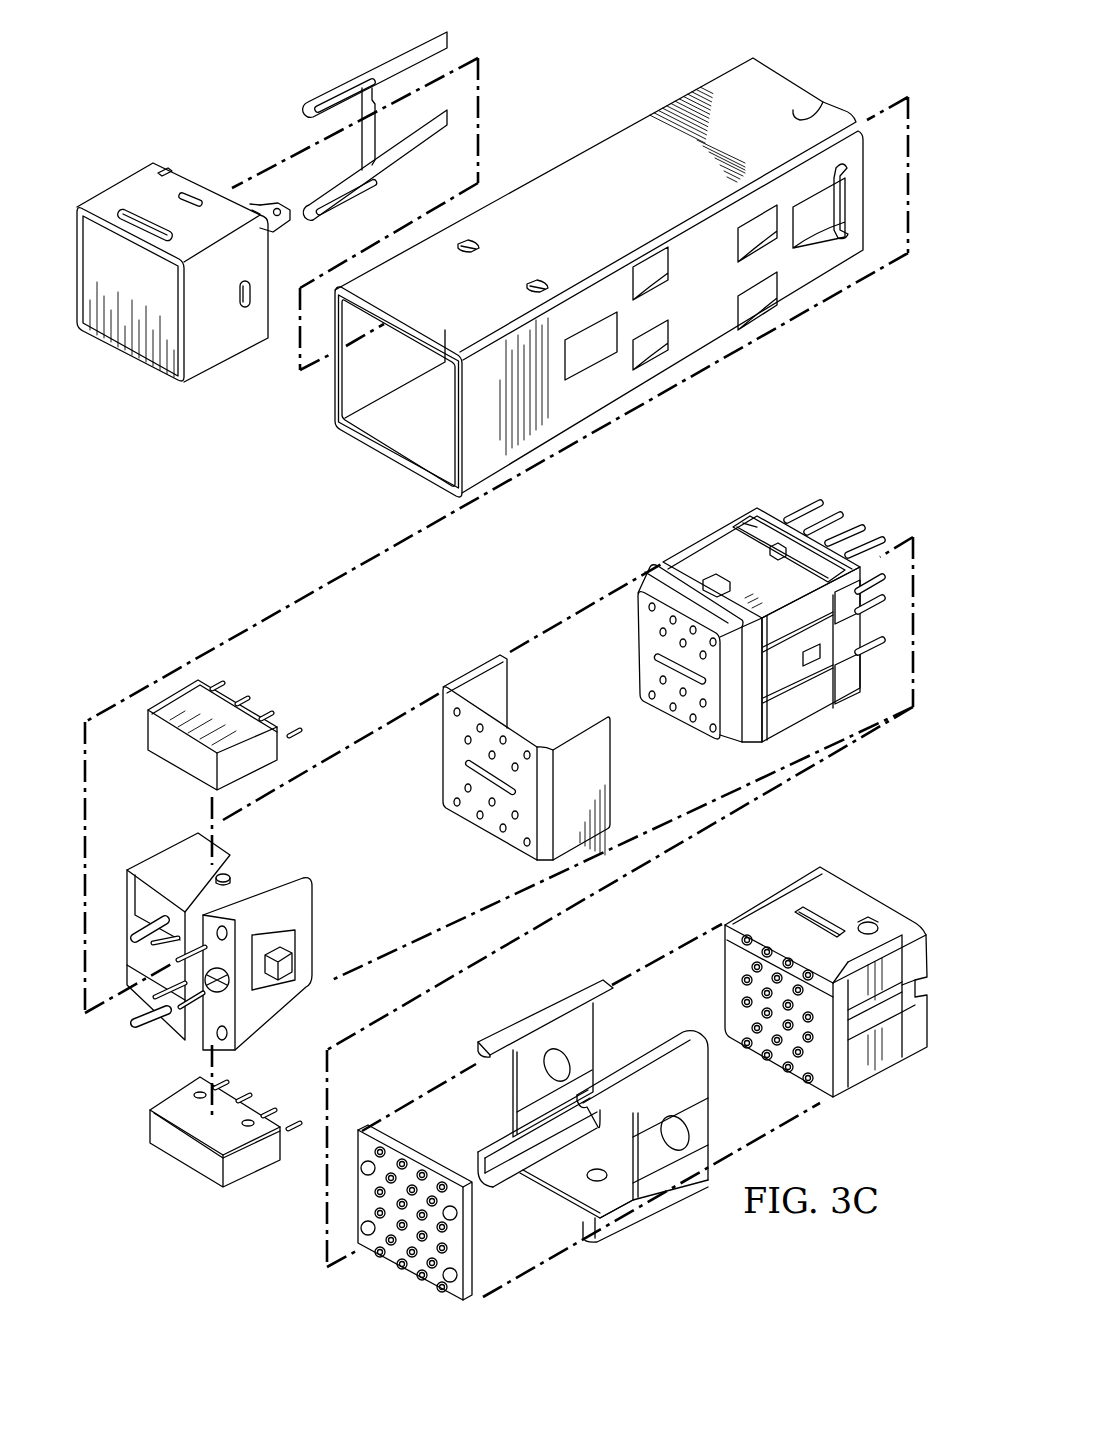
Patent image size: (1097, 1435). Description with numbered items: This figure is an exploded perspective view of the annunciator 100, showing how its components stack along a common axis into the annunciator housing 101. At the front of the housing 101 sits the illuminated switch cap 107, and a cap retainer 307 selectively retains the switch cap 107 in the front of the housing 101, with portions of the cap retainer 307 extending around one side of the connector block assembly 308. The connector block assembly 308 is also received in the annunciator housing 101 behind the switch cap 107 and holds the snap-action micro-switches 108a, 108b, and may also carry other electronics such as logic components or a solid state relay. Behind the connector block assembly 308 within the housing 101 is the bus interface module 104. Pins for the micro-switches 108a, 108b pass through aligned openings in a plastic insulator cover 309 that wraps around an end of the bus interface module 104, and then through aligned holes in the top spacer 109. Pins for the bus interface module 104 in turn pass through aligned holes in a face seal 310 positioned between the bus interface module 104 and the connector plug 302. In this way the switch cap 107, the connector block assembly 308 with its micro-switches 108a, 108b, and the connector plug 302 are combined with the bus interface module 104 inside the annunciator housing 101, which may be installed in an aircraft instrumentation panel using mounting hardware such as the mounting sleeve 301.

The annunciator 100 is at (136, 46).
The annunciator housing 101 is at (768, 77).
The bus interface module 104 is at (685, 509).
The switch cap 107 is at (120, 168).
The snap-action micro-switch 108a is at (182, 760).
The snap-action micro-switch 108b is at (182, 1157).
The top spacer 109 is at (637, 650).
The mounting sleeve 301 is at (545, 1015).
The connector plug 302 is at (772, 907).
The cap retainer 307 is at (345, 78).
The connector block assembly 308 is at (253, 887).
The plastic insulator cover 309 is at (493, 823).
The face seal 310 is at (455, 1240).